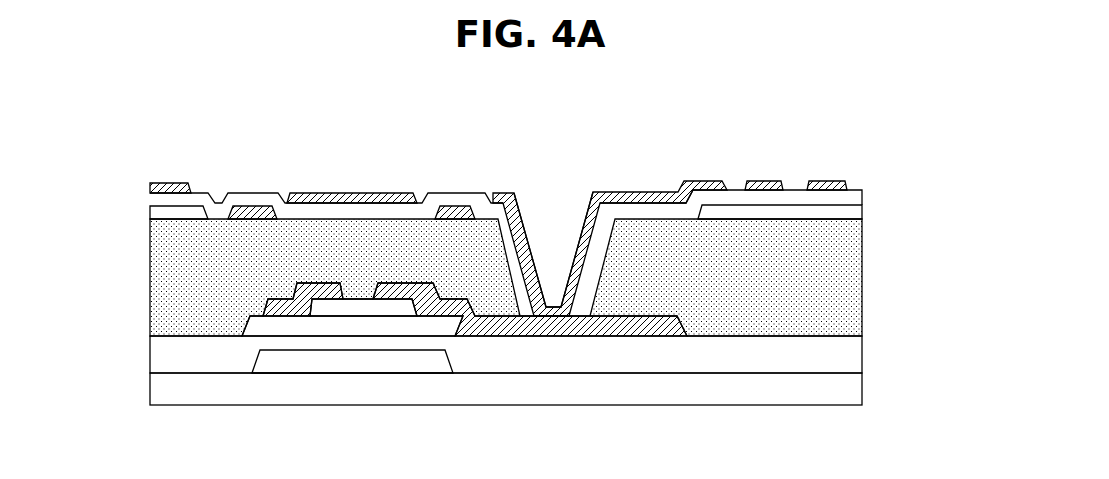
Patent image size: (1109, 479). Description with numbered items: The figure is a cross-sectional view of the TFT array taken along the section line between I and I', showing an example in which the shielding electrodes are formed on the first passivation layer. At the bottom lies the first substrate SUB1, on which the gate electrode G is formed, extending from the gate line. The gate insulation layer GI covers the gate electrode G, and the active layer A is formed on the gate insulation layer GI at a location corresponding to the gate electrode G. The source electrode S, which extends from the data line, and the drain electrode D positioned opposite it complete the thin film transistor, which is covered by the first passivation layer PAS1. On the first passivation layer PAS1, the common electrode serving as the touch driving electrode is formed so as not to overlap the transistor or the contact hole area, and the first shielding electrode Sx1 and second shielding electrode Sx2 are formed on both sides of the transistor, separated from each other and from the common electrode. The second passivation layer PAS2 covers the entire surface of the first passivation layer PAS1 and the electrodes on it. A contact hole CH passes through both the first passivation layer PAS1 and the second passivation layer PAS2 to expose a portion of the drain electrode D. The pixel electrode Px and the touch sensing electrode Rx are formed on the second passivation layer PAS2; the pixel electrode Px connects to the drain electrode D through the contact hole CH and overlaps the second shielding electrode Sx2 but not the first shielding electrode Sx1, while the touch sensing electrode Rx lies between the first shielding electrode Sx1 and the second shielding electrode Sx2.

The first substrate SUB1 is at (863, 382).
The gate insulation layer GI is at (863, 348).
The gate electrode G is at (338, 363).
The active layer A is at (387, 305).
The source electrode S is at (294, 300).
The drain electrode D is at (641, 330).
The first passivation layer PAS1 is at (863, 270).
The first shielding electrode Sx1 is at (250, 206).
The second shielding electrode Sx2 is at (454, 206).
The touch sensing electrode Rx is at (342, 193).
The second passivation layer PAS2 is at (863, 196).
The pixel electrode Px is at (168, 183).
The contact hole CH is at (555, 214).
The section line I is at (150, 428).
The section line I' is at (864, 428).